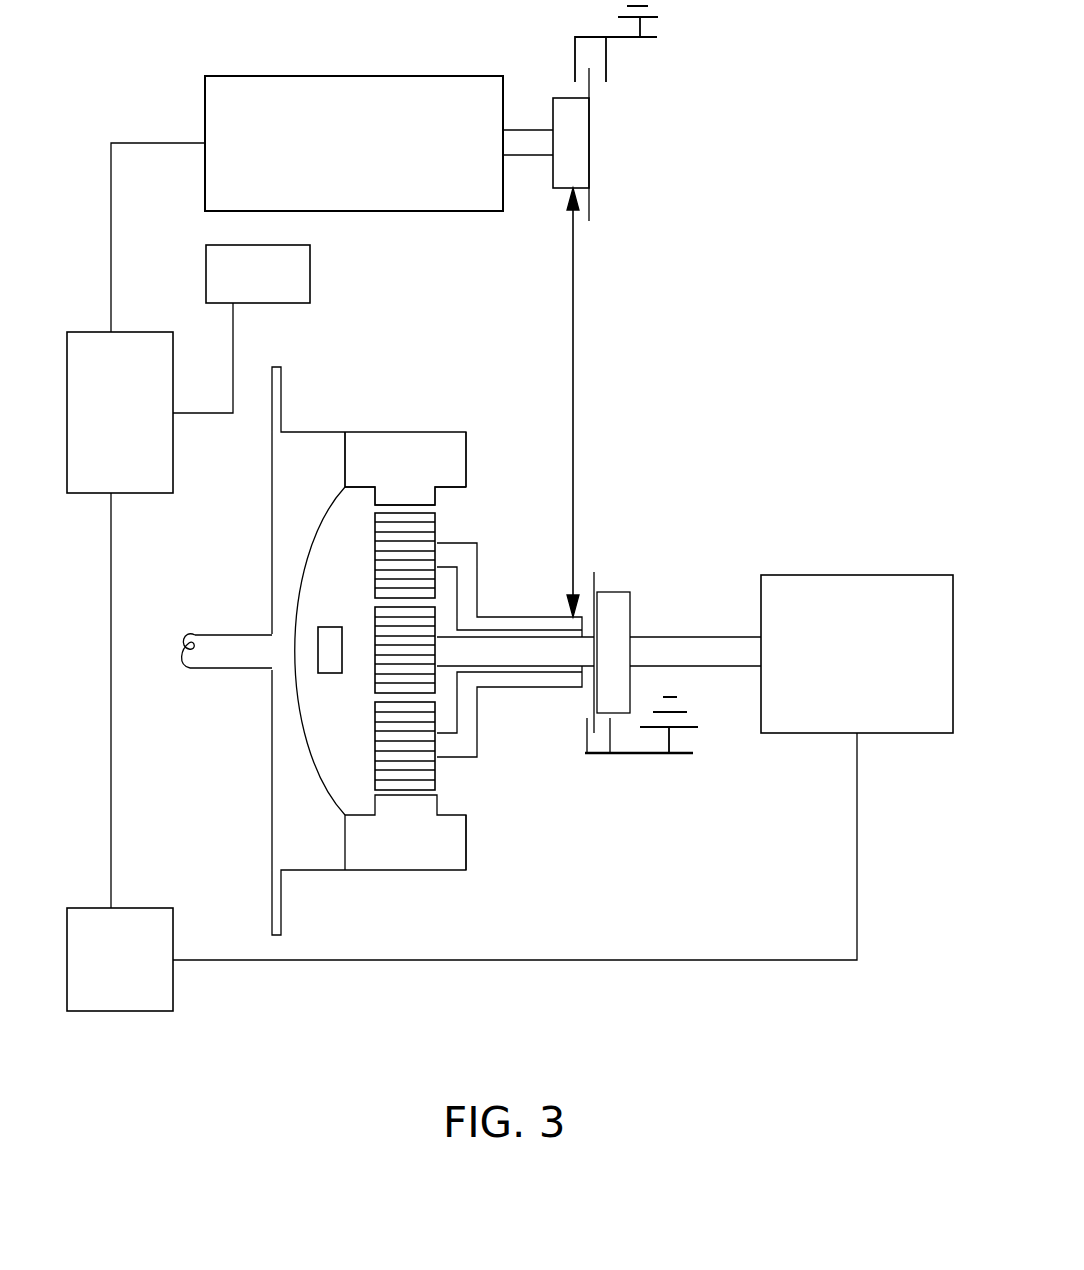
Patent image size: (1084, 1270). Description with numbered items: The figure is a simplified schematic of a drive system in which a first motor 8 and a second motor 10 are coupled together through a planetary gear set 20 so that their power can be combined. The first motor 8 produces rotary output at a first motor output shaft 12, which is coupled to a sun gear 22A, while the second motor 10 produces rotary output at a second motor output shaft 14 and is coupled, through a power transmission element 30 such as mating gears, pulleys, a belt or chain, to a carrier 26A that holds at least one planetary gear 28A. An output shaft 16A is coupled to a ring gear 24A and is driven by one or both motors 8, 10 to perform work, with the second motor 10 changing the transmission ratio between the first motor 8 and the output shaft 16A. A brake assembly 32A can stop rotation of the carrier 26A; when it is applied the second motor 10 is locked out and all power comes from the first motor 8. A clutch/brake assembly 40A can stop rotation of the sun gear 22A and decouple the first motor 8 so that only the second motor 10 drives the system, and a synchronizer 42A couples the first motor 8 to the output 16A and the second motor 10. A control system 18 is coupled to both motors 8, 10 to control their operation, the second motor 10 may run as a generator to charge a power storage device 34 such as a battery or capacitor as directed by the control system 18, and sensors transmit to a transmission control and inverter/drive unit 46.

The first motor 8 is at (853, 592).
The second motor 10 is at (352, 98).
The first motor output shaft 12 is at (656, 640).
The second motor output shaft 14 is at (520, 134).
The output shaft 16A is at (228, 652).
The control system 18 is at (143, 925).
The planetary gear set 20 is at (503, 776).
The sun gear 22A is at (378, 672).
The ring gear 24A is at (408, 450).
The carrier 26A is at (468, 557).
The planetary gear 28A is at (377, 542).
The power transmission element 30 is at (578, 374).
The brake assembly 32A is at (606, 61).
The power storage device 34 is at (293, 278).
The clutch/brake assembly 40A is at (595, 756).
The synchronizer 42A is at (327, 653).
The transmission control and inverter/drive unit 46 is at (143, 450).